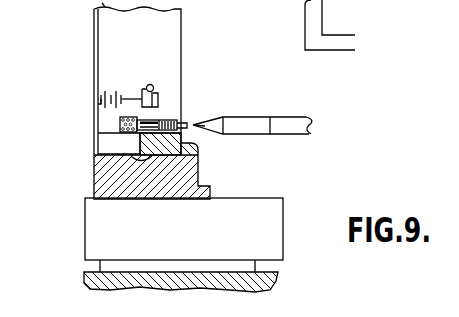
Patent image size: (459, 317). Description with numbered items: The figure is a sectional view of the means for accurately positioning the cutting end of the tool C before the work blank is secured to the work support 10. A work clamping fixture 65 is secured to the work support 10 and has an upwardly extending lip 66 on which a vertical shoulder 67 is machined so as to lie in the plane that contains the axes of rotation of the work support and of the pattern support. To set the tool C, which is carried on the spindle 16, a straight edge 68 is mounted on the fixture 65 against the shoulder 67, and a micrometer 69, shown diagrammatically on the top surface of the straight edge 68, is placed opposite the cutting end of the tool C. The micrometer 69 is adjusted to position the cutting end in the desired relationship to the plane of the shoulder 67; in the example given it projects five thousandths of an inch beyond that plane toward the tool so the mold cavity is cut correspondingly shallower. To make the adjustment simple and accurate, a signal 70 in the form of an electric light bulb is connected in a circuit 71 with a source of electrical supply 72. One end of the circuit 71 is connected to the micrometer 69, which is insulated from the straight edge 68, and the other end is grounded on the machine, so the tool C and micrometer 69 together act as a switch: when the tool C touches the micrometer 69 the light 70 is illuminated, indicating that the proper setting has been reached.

The work support 10 is at (276, 233).
The spindle 16 is at (298, 120).
The tool C is at (216, 118).
The work clamping fixture 65 is at (103, 180).
The lip 66 is at (190, 152).
The shoulder 67 is at (171, 150).
The straight edge 68 is at (103, 161).
The micrometer 69 is at (122, 123).
The signal 70 is at (150, 84).
The circuit 71 is at (97, 104).
The source of electrical supply 72 is at (112, 89).